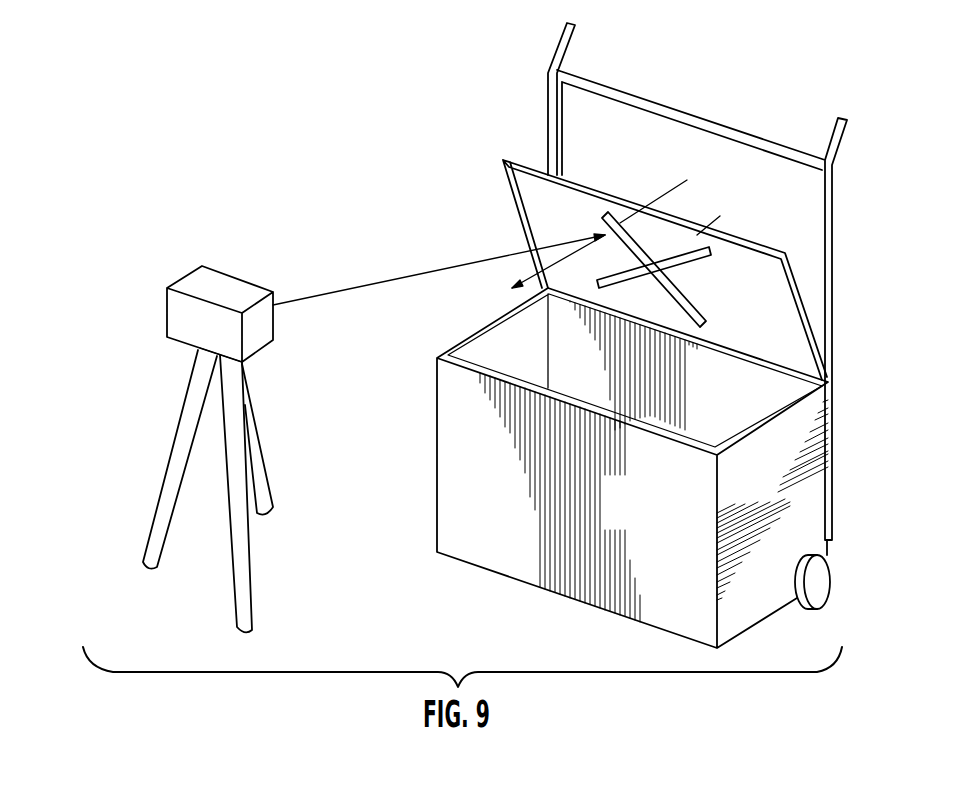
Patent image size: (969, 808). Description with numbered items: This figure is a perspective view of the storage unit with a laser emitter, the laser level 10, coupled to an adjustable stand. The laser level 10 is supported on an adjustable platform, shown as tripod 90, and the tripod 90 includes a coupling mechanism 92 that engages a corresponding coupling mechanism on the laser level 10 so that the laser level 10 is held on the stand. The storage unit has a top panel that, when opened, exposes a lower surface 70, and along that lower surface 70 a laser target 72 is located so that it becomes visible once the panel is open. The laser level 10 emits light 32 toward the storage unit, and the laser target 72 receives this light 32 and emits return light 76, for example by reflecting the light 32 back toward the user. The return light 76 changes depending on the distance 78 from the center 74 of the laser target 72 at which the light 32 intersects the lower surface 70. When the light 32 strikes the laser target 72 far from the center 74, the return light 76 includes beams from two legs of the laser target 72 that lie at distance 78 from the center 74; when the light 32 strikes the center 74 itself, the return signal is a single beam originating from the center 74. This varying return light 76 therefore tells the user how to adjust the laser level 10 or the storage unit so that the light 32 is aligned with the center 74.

The laser level 10 is at (192, 278).
The light 32 is at (333, 282).
The coupling mechanism 92 is at (249, 367).
The tripod 90 is at (160, 463).
The lower surface 70 is at (762, 305).
The laser target 72 is at (715, 320).
The center 74 is at (652, 278).
The return light 76 is at (520, 277).
The distance 78 is at (709, 229).